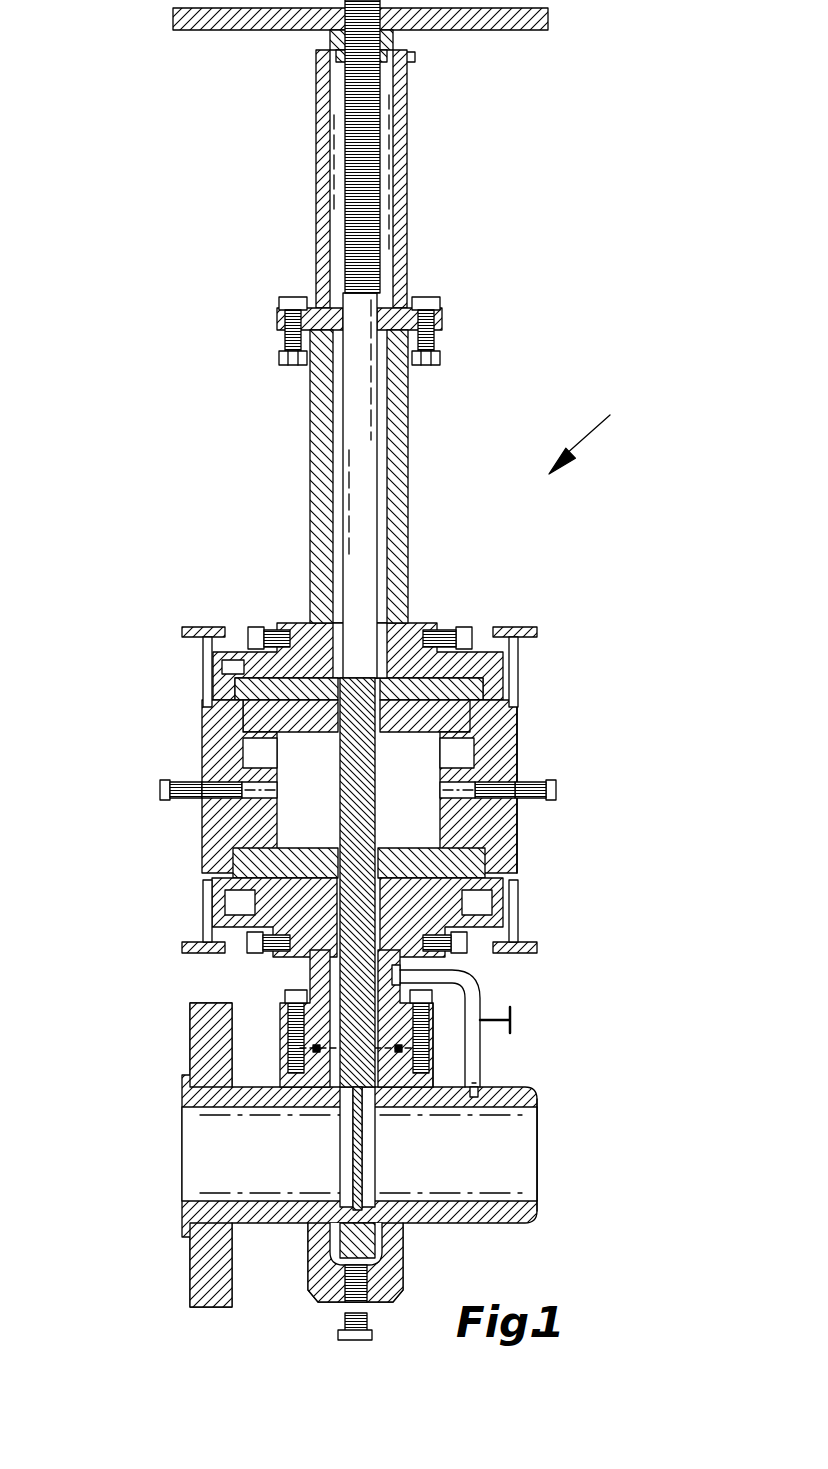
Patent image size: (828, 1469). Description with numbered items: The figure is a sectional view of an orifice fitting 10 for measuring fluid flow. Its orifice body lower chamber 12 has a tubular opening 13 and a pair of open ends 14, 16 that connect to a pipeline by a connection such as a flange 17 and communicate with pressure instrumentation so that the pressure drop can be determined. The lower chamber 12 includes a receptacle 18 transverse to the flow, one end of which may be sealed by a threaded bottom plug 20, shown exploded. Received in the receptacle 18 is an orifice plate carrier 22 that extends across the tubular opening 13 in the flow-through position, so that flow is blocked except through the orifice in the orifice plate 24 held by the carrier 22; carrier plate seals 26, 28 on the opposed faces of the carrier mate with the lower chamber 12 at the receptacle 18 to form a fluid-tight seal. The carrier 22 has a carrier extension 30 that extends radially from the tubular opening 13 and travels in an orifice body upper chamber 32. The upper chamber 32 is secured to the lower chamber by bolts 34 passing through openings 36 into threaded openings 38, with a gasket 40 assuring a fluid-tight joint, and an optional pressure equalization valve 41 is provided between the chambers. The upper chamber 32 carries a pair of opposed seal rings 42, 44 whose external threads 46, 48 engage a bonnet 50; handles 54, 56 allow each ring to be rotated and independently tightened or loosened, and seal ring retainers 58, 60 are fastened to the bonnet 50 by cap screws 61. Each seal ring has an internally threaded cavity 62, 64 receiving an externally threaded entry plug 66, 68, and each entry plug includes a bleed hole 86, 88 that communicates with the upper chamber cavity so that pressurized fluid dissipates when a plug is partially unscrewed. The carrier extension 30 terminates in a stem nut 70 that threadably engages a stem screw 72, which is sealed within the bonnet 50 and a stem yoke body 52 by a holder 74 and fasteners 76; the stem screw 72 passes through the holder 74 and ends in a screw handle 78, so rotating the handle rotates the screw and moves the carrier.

The orifice fitting 10 is at (604, 426).
The orifice body lower chamber 12 is at (530, 1222).
The tubular opening 13 is at (359, 1154).
The open end 14 is at (182, 1140).
The open end 16 is at (537, 1178).
The flange 17 is at (192, 1280).
The receptacle 18 is at (403, 1290).
The threaded bottom plug 20 is at (162, 790).
The orifice plate carrier 22 is at (380, 1258).
The orifice plate 24 is at (340, 1225).
The carrier plate seal 26 is at (330, 1258).
The carrier plate seal 28 is at (380, 1222).
The carrier extension 30 is at (420, 966).
The orifice body upper chamber 32 is at (420, 1022).
The bolt 34 is at (290, 993).
The opening 36 is at (293, 1005).
The threaded opening 38 is at (300, 1060).
The gasket 40 is at (300, 1045).
The pressure equalization valve 41 is at (512, 1022).
The seal ring 42 is at (245, 702).
The seal ring 44 is at (485, 692).
The external threads 46 is at (222, 668).
The external threads 48 is at (505, 722).
The bonnet 50 is at (408, 492).
The stem yoke body 52 is at (404, 248).
The handle 54 is at (210, 627).
The handle 56 is at (512, 628).
The seal ring retainer 58 is at (242, 905).
The seal ring retainer 60 is at (516, 660).
The cap screw 61 is at (258, 630).
The internally threaded cavity 62 is at (305, 857).
The internally threaded cavity 64 is at (430, 856).
The entry plug 66 is at (260, 720).
The entry plug 68 is at (515, 822).
The stem nut 70 is at (404, 93).
The stem screw 72 is at (383, 185).
The holder 74 is at (445, 310).
The fastener 76 is at (428, 368).
The screw handle 78 is at (528, 32).
The bleed hole 86 is at (222, 752).
The bleed hole 88 is at (490, 755).